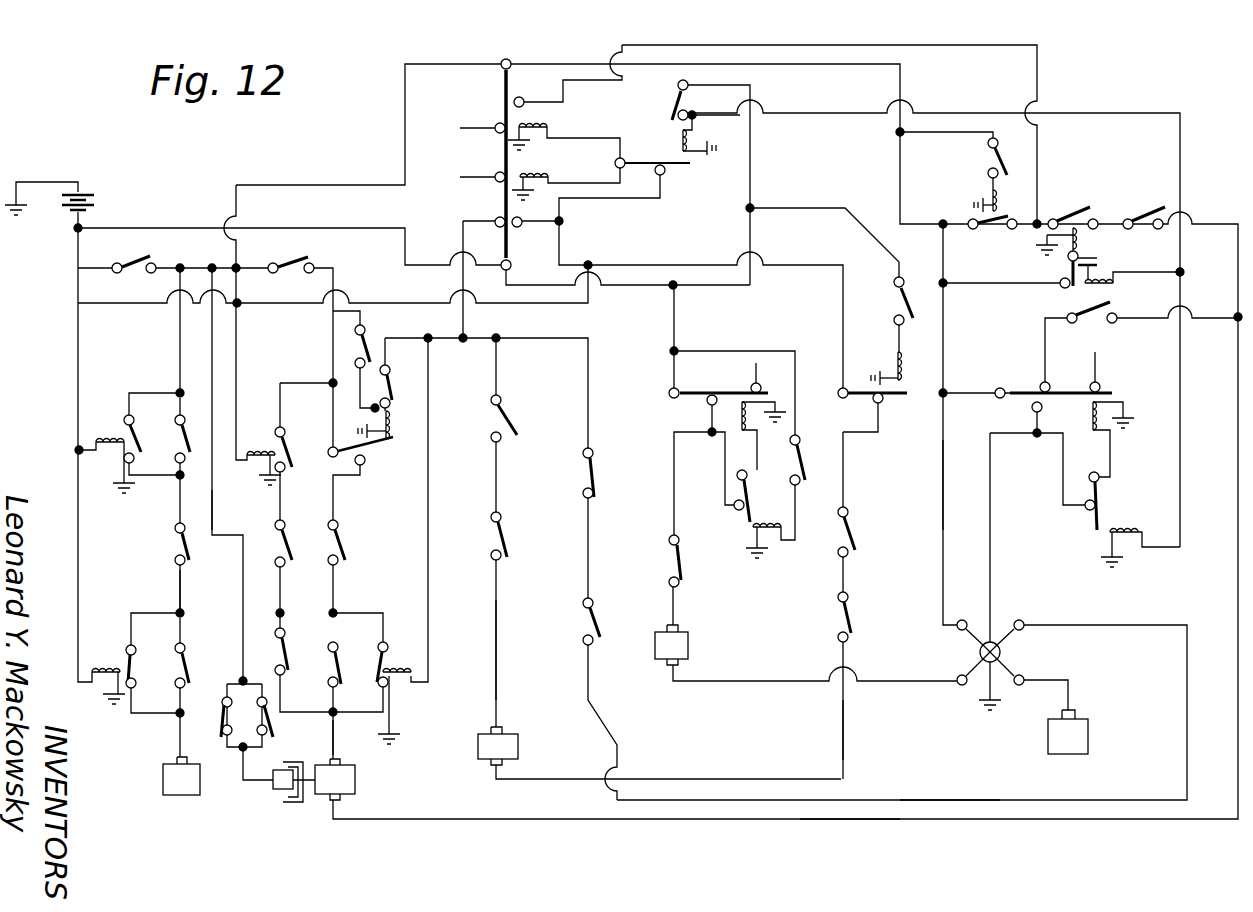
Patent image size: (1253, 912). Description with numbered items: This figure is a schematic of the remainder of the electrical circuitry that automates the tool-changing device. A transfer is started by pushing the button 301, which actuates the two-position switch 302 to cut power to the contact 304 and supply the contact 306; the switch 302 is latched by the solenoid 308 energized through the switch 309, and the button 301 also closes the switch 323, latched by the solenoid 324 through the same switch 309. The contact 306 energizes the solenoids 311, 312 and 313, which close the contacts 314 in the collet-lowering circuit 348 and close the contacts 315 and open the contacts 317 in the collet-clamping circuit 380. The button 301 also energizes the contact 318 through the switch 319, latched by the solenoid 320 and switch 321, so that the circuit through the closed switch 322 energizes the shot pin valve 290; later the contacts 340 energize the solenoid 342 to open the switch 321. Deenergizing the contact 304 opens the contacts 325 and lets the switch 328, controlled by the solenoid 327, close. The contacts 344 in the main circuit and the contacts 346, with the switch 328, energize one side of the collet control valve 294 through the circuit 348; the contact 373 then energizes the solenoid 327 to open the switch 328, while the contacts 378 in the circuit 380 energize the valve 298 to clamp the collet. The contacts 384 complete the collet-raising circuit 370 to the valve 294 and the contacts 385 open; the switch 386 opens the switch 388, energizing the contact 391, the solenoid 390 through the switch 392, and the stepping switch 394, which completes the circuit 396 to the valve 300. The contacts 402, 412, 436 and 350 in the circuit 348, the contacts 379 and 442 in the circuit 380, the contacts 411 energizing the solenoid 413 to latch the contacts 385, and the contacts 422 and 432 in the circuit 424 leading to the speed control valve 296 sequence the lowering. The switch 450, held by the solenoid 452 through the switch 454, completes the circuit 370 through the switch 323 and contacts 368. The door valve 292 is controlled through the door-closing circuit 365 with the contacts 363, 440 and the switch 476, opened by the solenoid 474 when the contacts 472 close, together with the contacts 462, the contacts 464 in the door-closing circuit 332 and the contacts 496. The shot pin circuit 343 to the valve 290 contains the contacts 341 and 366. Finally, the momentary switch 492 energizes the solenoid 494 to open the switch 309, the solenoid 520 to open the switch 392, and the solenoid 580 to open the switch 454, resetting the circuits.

The contacts 344 is at (135, 265).
The contacts 462 is at (295, 265).
The switch 323 is at (504, 90).
The button 301 is at (478, 130).
The switch 302 is at (504, 190).
The contact 304 is at (500, 218).
The contact 306 is at (517, 228).
The solenoid 324 is at (552, 126).
The solenoid 308 is at (550, 170).
The switch 309 is at (666, 176).
The momentary contact switch 492 is at (678, 95).
The solenoid 494 is at (683, 147).
The contacts 411 is at (990, 143).
The solenoid 413 is at (988, 202).
The switch contacts 385 is at (990, 228).
The switch 450 is at (1066, 218).
The contacts 368 is at (1140, 218).
The solenoid 452 is at (1085, 236).
The switch 454 is at (1063, 276).
The solenoid 580 is at (1110, 288).
The contacts 472 is at (900, 300).
The solenoid 474 is at (935, 352).
The switch 476 is at (868, 378).
The contacts 384 is at (1095, 320).
The switch 388 is at (1075, 390).
The switch 386 is at (1096, 362).
The contact 391 is at (1030, 410).
The solenoid 390 is at (1112, 408).
The switch 392 is at (1099, 516).
The solenoid 520 is at (1128, 548).
The stepping switch 394 is at (1000, 636).
The valve 300 is at (1088, 740).
The circuit 396 is at (943, 485).
The contacts 440 is at (848, 535).
The contacts 363 is at (842, 628).
The door-closing circuit 365 is at (842, 740).
The shot pin release circuit 343 is at (960, 800).
The collet-raising circuit 370 is at (855, 820).
The valve 290 is at (655, 648).
The valve 292 is at (478, 745).
The contacts 341 is at (588, 620).
The door-closing circuit 332 is at (496, 637).
The contacts 366 is at (586, 465).
The contacts 496 is at (495, 412).
The contacts 464 is at (500, 540).
The switch 319 is at (735, 390).
The contact 318 is at (710, 405).
The solenoid 320 is at (765, 430).
The switch 321 is at (745, 515).
The solenoid 342 is at (770, 545).
The switch contacts 340 is at (805, 465).
The switch 322 is at (674, 560).
The contact 373 is at (372, 336).
The switch contacts 402 is at (405, 365).
The solenoid 327 is at (380, 418).
The switch 328 is at (365, 465).
The contacts 346 is at (341, 548).
The solenoid 312 is at (110, 436).
The contacts 315 is at (138, 447).
The contacts 379 is at (176, 425).
The contacts 378 is at (180, 545).
The collet-clamping circuit 380 is at (180, 583).
The contacts 442 is at (175, 660).
The contacts 317 is at (178, 683).
The solenoid 313 is at (100, 668).
The valve 298 is at (163, 785).
The circuit 424 is at (213, 520).
The solenoid 311 is at (256, 450).
The switch contacts 314 is at (288, 458).
The contacts 412 is at (282, 548).
The contacts 436 is at (278, 636).
The switch contacts 422 is at (225, 700).
The contacts 432 is at (262, 700).
The contacts 350 is at (333, 665).
The contacts 325 is at (380, 660).
The collet-lowering circuit 348 is at (334, 746).
The speed control valve 296 is at (275, 768).
The valve 294 is at (355, 780).